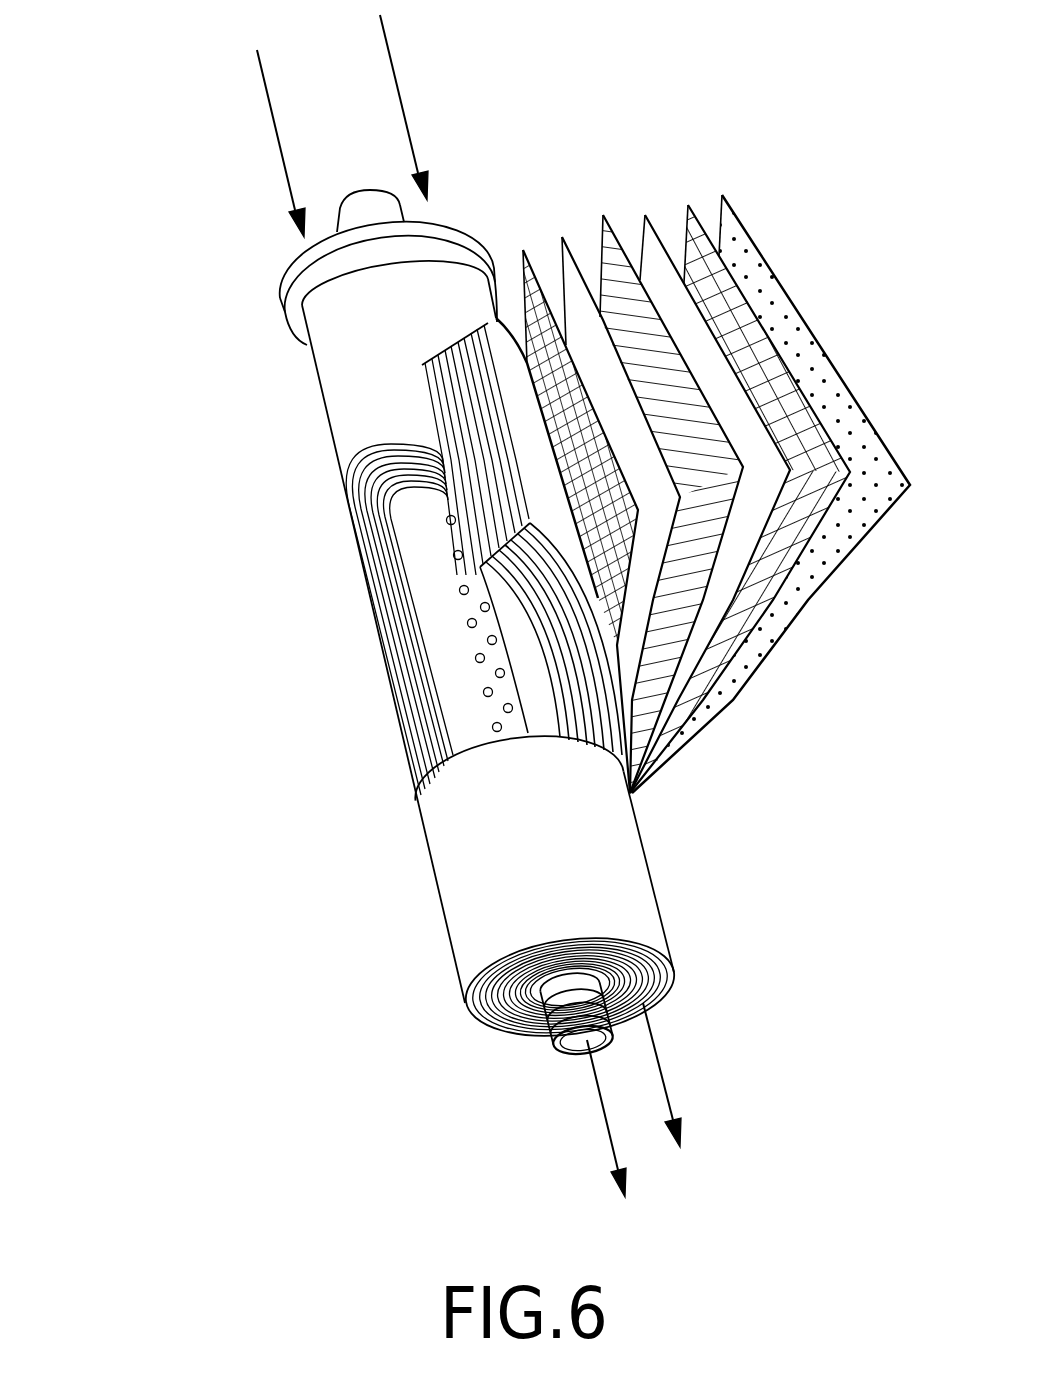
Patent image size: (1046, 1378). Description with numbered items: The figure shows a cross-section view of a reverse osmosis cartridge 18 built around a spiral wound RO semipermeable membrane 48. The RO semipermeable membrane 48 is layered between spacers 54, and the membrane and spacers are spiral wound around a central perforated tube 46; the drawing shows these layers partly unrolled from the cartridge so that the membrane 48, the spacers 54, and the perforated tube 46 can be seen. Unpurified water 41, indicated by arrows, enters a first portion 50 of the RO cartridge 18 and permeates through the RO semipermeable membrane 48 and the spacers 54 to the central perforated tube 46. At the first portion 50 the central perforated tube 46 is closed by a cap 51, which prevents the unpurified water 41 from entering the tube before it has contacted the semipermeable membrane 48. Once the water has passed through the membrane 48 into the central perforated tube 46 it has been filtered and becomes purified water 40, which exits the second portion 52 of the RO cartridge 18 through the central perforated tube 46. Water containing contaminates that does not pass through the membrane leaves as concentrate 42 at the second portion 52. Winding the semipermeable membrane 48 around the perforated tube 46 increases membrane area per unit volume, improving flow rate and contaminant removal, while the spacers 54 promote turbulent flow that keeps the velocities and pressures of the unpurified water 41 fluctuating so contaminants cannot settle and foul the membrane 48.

The RO cartridge 18 is at (190, 535).
The purified water 40 is at (603, 1113).
The unpurified water 41 is at (266, 85).
The concentrate 42 is at (660, 1060).
The central perforated tube 46 is at (464, 590).
The RO semipermeable membrane 48 is at (647, 213).
The first portion 50 is at (447, 230).
The cap 51 is at (362, 200).
The second portion 52 is at (470, 1012).
The spacers 54 is at (608, 223).